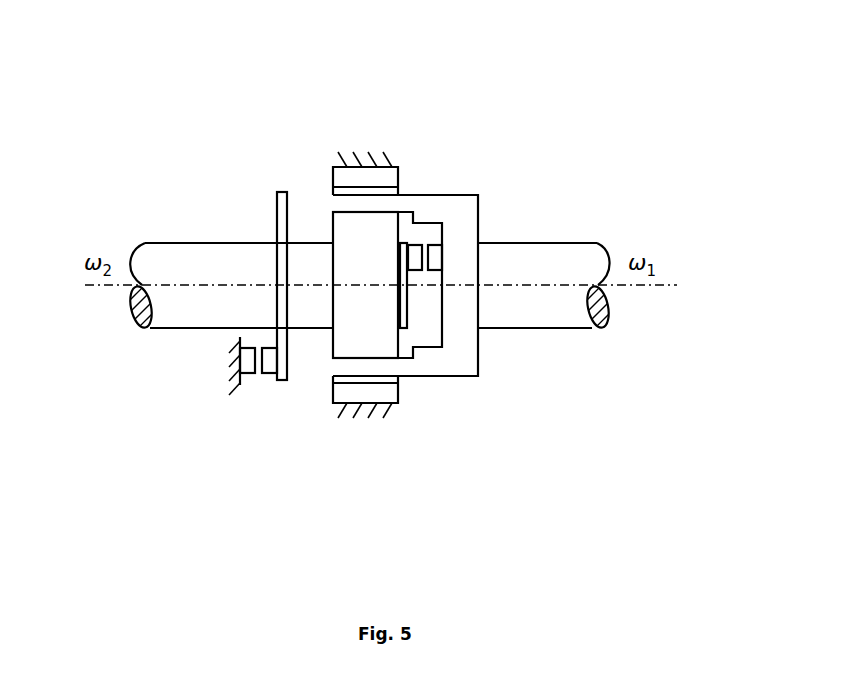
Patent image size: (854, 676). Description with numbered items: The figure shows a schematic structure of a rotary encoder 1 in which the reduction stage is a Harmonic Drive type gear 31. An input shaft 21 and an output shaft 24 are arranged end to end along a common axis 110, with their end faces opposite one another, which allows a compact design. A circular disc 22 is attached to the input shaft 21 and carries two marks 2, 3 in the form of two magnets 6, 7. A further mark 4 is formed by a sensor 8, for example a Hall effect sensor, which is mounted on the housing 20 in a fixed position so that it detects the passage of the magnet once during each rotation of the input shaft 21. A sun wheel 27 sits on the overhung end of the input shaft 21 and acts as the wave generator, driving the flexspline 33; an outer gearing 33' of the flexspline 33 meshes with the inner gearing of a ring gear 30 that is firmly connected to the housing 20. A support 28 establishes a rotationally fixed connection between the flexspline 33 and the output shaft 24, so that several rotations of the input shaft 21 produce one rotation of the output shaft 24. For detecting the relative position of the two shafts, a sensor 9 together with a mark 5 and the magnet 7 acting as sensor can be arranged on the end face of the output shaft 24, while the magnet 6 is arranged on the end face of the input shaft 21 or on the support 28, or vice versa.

The rotary encoder 1 is at (548, 131).
The mark 2 is at (243, 469).
The mark 3 is at (525, 370).
The mark 4 is at (206, 433).
The mark 5 is at (546, 338).
The magnet 6 is at (268, 362).
The magnet 7 is at (413, 257).
The sensor 8 is at (238, 386).
The sensor 9 is at (435, 257).
The housing 20 is at (378, 157).
The shaft 21 is at (160, 262).
The disc 22 is at (280, 233).
The shaft 24 is at (585, 260).
The sun wheel 27 is at (385, 318).
The support 28 is at (462, 358).
The ring gear 30 is at (365, 175).
The gear 31 is at (414, 442).
The flexspline 33 is at (369, 479).
The outer gearing 33' is at (352, 485).
The axis 110 is at (632, 287).